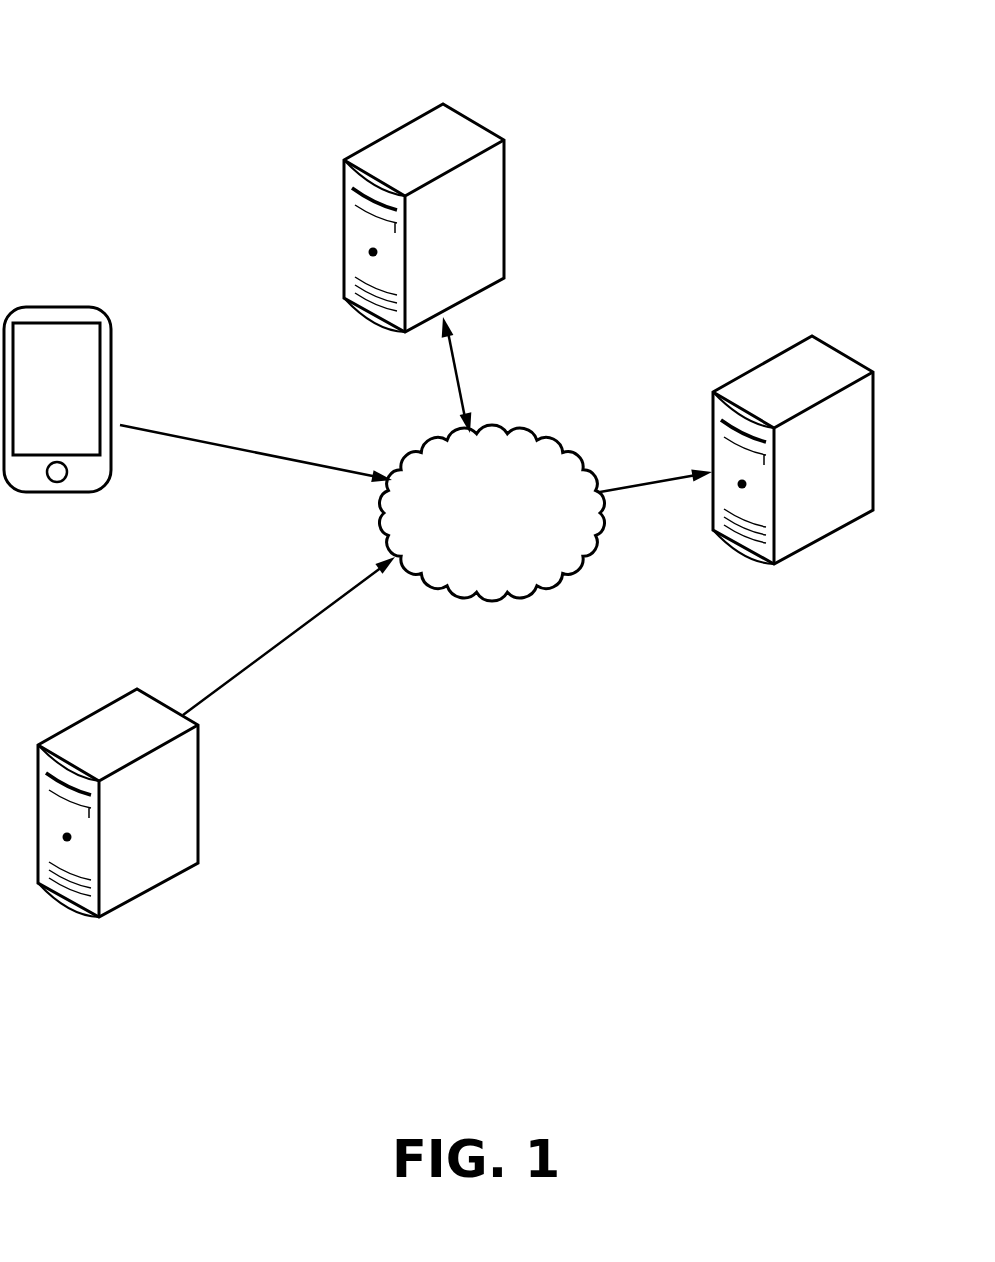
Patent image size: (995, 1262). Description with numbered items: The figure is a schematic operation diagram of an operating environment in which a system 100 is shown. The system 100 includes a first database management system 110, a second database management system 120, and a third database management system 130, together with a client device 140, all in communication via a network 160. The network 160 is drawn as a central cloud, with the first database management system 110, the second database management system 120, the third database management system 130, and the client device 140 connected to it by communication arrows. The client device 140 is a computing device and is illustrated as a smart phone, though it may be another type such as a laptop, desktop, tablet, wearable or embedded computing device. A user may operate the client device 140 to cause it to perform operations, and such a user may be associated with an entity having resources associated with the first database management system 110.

The system 100 is at (158, 173).
The first database management system 110 is at (842, 355).
The second database management system 120 is at (505, 172).
The third database management system 130 is at (198, 767).
The client device 140 is at (112, 387).
The network 160 is at (472, 525).